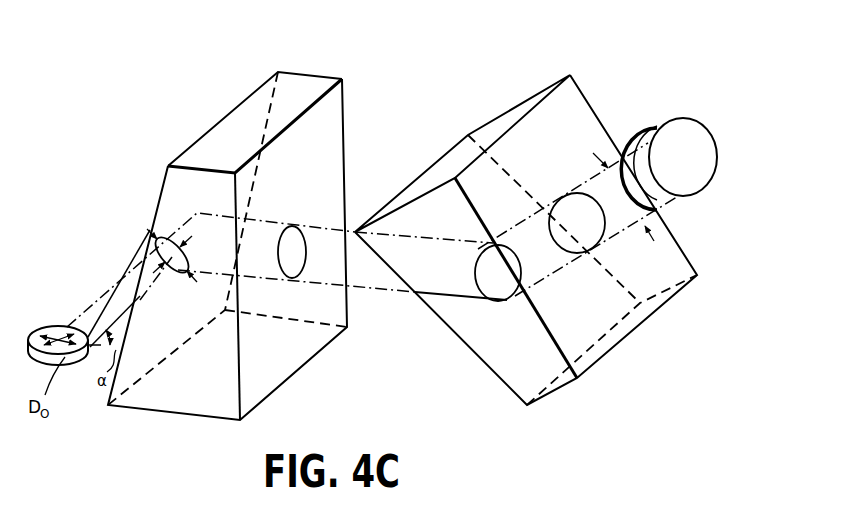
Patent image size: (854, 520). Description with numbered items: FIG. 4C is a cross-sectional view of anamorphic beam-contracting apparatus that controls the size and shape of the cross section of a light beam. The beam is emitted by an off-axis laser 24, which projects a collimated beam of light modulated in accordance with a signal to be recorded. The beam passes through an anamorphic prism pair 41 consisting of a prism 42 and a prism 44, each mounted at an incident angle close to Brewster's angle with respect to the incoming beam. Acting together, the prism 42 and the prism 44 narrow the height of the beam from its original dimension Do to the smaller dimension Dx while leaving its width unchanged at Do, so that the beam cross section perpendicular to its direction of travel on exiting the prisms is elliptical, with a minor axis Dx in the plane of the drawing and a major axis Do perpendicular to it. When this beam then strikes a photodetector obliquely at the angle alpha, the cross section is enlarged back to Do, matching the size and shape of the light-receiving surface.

The laser 24 is at (680, 133).
The anamorphic prism pair 41 is at (410, 106).
The prism 42 is at (308, 83).
The prism 44 is at (502, 340).